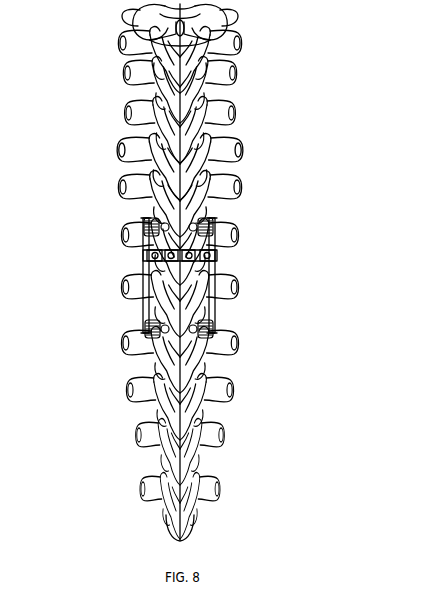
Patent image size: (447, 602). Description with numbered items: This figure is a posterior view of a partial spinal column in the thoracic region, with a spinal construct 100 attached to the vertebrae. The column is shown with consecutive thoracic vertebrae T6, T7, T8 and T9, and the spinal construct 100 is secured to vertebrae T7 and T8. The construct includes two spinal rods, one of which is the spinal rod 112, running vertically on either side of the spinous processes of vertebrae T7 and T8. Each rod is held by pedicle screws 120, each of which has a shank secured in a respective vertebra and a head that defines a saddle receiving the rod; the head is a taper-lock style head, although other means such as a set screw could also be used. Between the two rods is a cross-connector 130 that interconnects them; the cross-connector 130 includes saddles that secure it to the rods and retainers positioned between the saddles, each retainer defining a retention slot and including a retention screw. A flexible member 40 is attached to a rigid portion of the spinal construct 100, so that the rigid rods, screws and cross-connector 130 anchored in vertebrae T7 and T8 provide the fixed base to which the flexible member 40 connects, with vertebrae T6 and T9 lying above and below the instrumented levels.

The flexible member 40 is at (152, 207).
The spinal construct 100 is at (204, 270).
The spinal rod 112 is at (146, 303).
The pedicle screw 120 is at (226, 222).
The cross-connector 130 is at (145, 255).
The vertebra T6 is at (233, 176).
The vertebra T7 is at (232, 229).
The vertebra T8 is at (234, 281).
The vertebra T9 is at (234, 338).